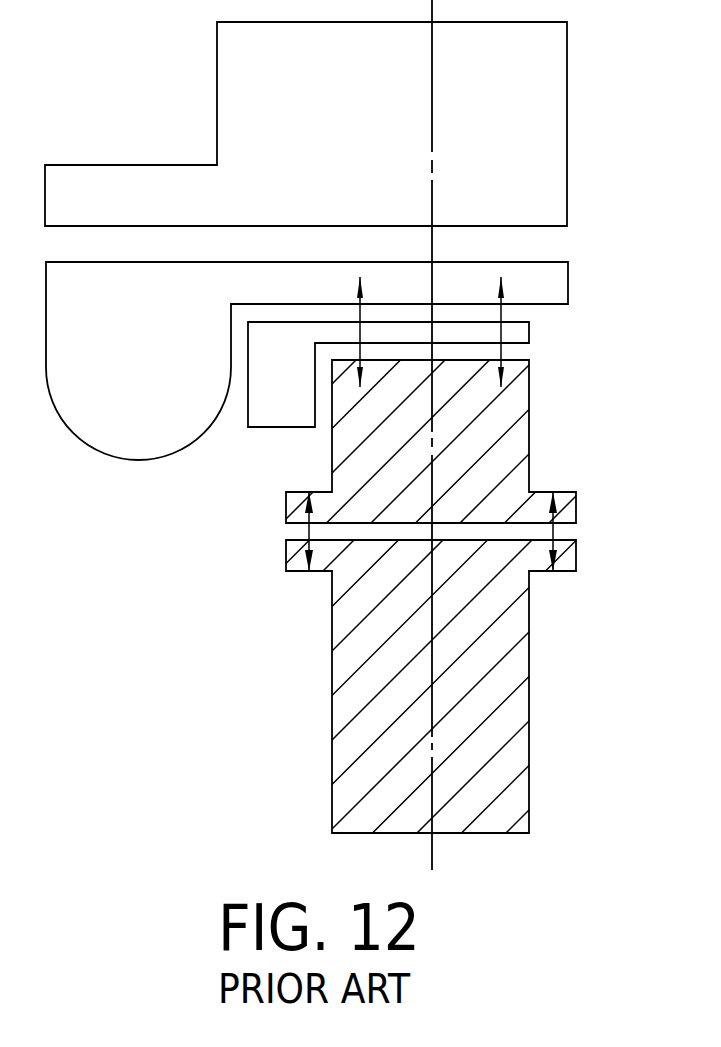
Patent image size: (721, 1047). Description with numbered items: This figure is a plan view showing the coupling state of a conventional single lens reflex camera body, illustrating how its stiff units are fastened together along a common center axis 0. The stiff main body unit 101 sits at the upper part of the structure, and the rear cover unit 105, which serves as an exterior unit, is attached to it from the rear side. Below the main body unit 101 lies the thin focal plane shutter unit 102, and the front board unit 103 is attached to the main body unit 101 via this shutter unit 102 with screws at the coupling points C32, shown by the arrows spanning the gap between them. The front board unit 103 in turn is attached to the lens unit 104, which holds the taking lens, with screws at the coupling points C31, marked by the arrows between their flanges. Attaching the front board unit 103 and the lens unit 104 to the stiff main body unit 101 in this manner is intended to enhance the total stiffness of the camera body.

The center axis 0 is at (433, 853).
The main body unit 101 is at (570, 262).
The focal plane shutter unit 102 is at (530, 341).
The front board unit 103 is at (512, 443).
The lens unit 104 is at (512, 670).
The rear cover unit 105 is at (567, 148).
The coupling points C31 is at (307, 528).
The coupling points C32 is at (500, 317).